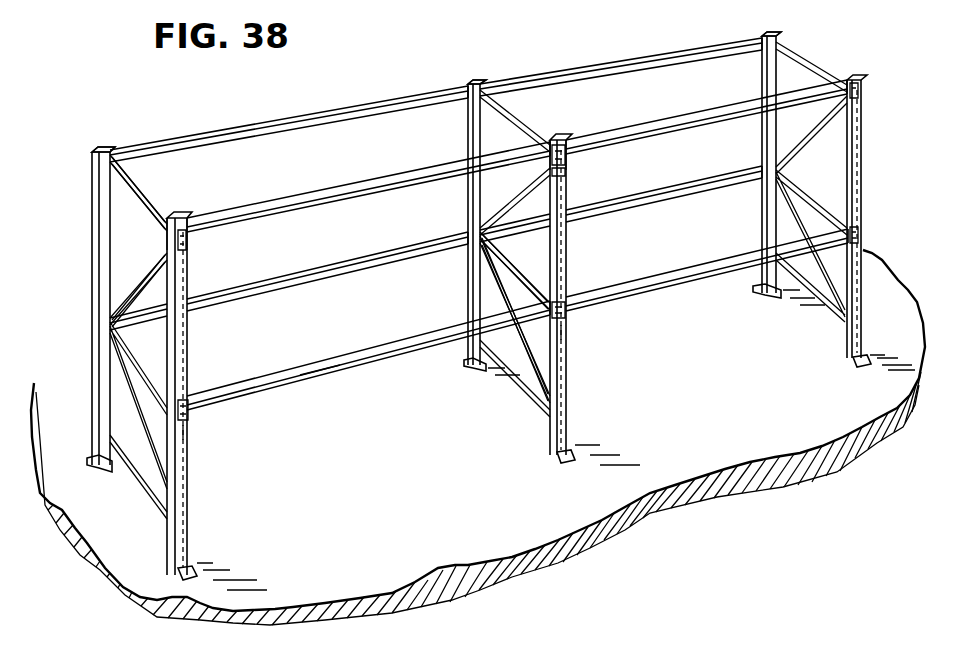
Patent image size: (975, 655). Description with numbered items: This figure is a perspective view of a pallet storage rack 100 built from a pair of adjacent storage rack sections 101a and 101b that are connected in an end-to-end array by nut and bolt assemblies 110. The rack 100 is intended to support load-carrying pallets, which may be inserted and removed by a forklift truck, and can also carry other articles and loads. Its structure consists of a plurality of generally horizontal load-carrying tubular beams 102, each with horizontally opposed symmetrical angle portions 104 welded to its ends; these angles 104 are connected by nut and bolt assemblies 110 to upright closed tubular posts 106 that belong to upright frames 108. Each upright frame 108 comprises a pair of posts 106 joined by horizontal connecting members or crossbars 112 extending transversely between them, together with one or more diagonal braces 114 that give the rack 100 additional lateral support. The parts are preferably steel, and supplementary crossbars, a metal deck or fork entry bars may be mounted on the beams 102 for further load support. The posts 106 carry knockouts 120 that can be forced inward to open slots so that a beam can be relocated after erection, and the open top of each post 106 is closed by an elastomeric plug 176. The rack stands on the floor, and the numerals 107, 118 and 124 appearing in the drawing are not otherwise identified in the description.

The pallet storage rack 100 is at (403, 85).
The storage rack section 101a is at (228, 124).
The storage rack section 101b is at (680, 43).
The load-carrying tubular beam 102 is at (345, 172).
The angle portion 104 is at (190, 236).
The upright closed tubular post 106 is at (92, 317).
The beam connector 107 is at (578, 184).
The upright frame 108 is at (528, 115).
The nut and bolt assembly 110 is at (862, 92).
The horizontal connecting member 112 is at (132, 210).
The diagonal brace 114 is at (138, 265).
The beam flange 118 is at (328, 382).
The knockout 120 is at (568, 335).
The floor 124 is at (612, 460).
The plug 176 is at (100, 147).